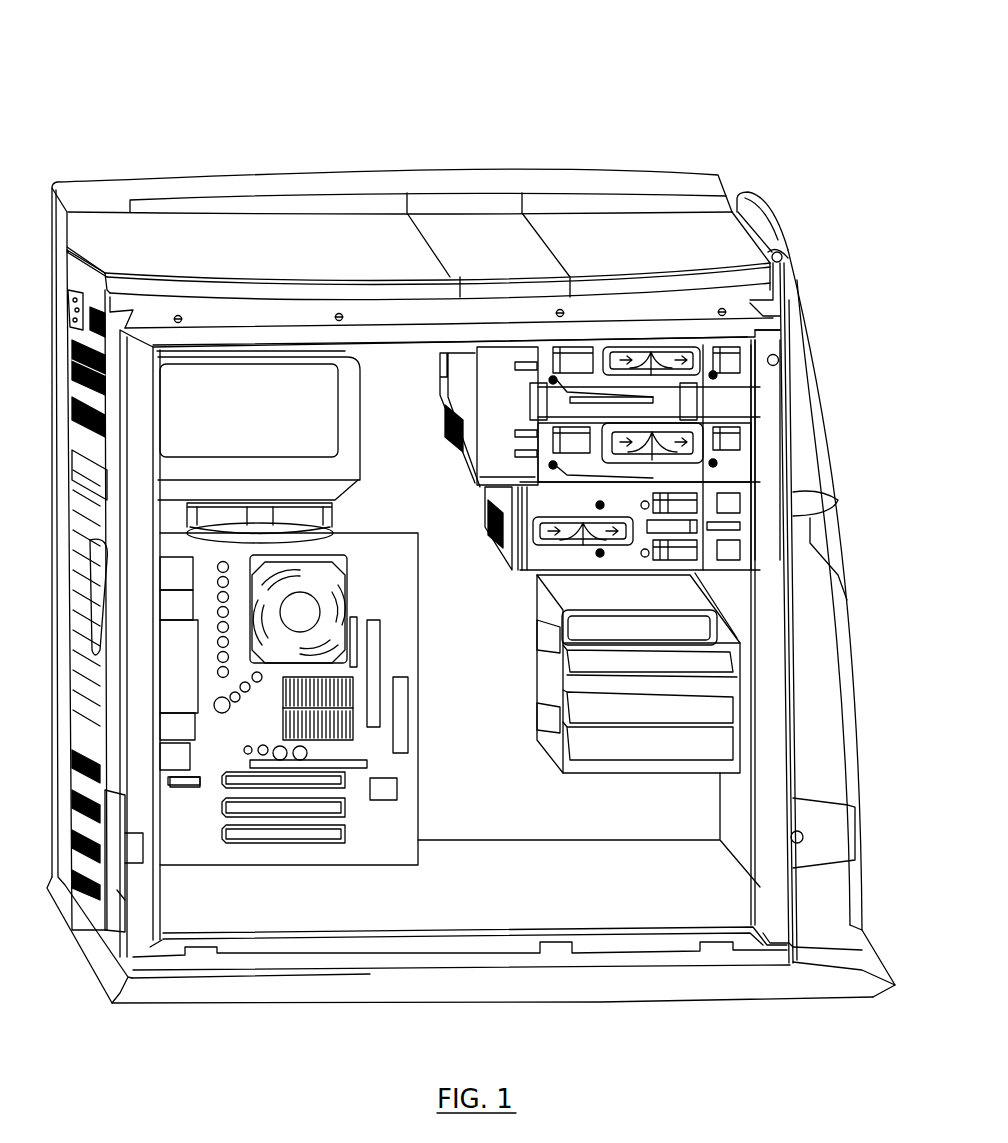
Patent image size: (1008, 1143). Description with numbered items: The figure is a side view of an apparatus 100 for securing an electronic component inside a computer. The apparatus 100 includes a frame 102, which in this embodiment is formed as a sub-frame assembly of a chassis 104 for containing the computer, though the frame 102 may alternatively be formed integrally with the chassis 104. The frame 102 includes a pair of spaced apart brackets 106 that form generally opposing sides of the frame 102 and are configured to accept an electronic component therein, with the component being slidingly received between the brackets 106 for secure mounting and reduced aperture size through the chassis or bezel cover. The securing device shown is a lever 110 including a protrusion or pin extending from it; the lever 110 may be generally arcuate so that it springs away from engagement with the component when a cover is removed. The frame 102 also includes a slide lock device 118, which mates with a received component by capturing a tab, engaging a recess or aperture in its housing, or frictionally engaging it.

The apparatus 100 is at (733, 92).
The frame 102 is at (498, 362).
The chassis 104 is at (777, 342).
The spaced apart brackets 106 is at (733, 377).
The lever 110 is at (580, 477).
The slide lock device 118 is at (665, 363).